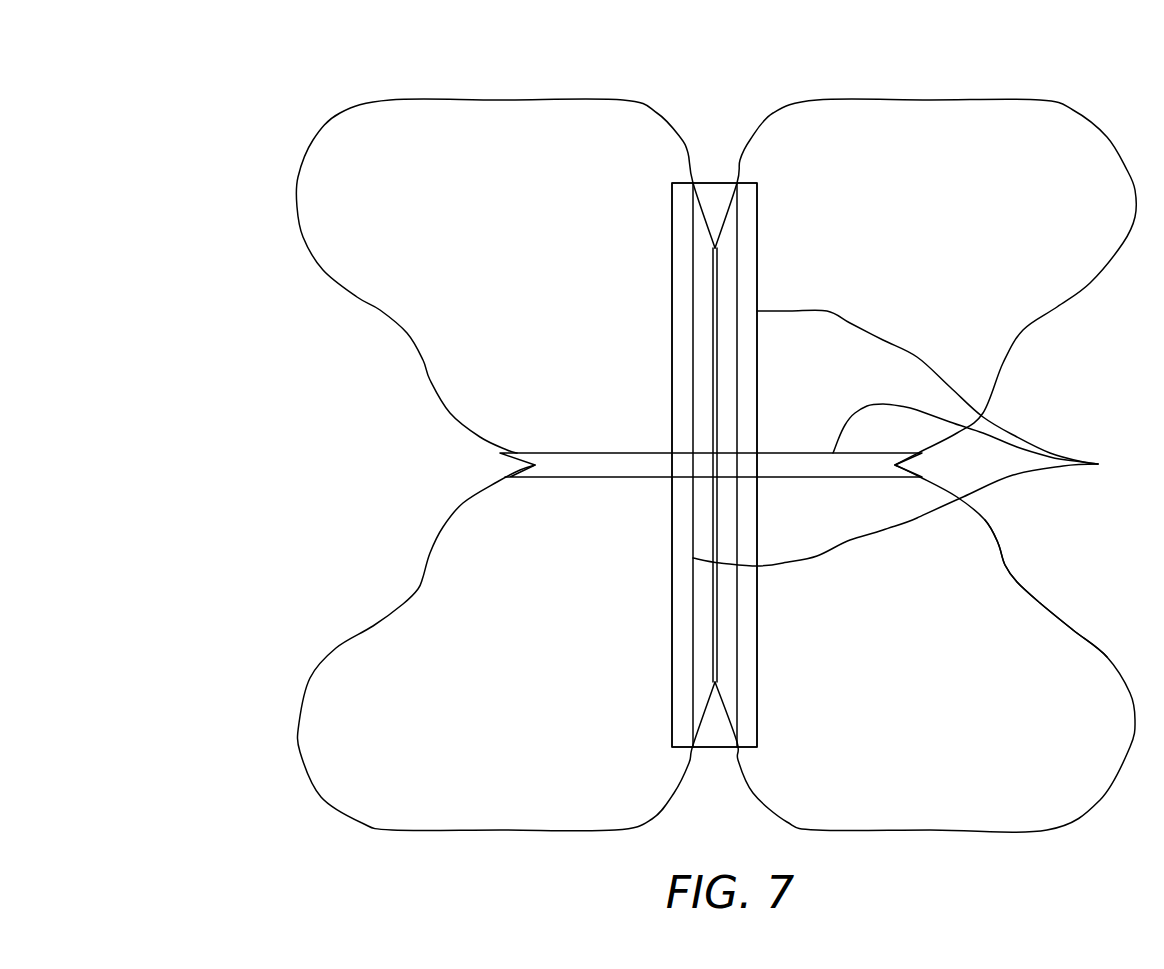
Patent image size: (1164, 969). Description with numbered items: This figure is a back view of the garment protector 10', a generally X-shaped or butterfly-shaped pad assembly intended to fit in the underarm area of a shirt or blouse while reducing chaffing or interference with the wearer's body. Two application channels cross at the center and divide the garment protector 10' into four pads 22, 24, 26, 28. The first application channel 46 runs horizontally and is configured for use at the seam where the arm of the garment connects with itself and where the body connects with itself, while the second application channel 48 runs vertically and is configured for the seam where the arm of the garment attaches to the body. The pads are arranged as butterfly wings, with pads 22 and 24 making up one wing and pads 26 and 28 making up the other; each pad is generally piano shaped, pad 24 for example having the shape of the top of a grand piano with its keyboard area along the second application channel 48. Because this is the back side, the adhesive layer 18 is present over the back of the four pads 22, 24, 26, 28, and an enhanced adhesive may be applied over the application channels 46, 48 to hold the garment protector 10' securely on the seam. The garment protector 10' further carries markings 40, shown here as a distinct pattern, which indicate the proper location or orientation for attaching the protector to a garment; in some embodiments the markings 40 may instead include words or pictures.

The garment protector 10' is at (452, 465).
The adhesive layer 18 is at (1068, 658).
The pad 22 is at (373, 128).
The pad 24 is at (1057, 130).
The pad 26 is at (1057, 800).
The pad 28 is at (373, 799).
The markings 40 is at (1098, 464).
The first application channel 46 is at (525, 466).
The second application channel 48 is at (703, 243).